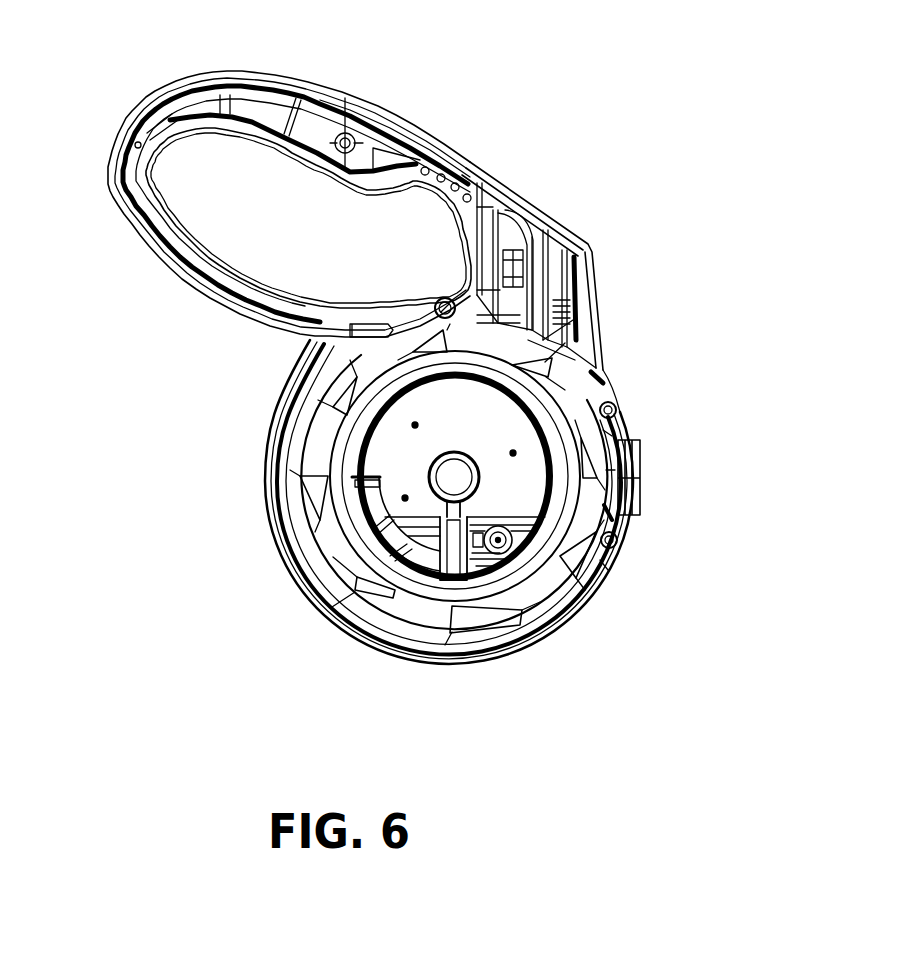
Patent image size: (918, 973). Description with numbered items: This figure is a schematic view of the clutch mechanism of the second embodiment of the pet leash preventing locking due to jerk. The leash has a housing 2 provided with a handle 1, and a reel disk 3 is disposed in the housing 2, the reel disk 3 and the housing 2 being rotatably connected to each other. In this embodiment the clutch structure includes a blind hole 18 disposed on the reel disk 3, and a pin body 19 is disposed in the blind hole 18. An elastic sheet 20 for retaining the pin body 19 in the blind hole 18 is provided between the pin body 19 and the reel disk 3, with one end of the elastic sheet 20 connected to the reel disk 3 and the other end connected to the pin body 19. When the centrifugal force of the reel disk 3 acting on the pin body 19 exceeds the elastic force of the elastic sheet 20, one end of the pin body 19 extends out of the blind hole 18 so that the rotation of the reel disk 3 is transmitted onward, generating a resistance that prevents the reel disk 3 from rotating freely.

The handle 1 is at (375, 125).
The housing 2 is at (613, 578).
The reel disk 3 is at (587, 525).
The blind hole 18 is at (493, 575).
The pin body 19 is at (452, 568).
The elastic sheet 20 is at (383, 543).